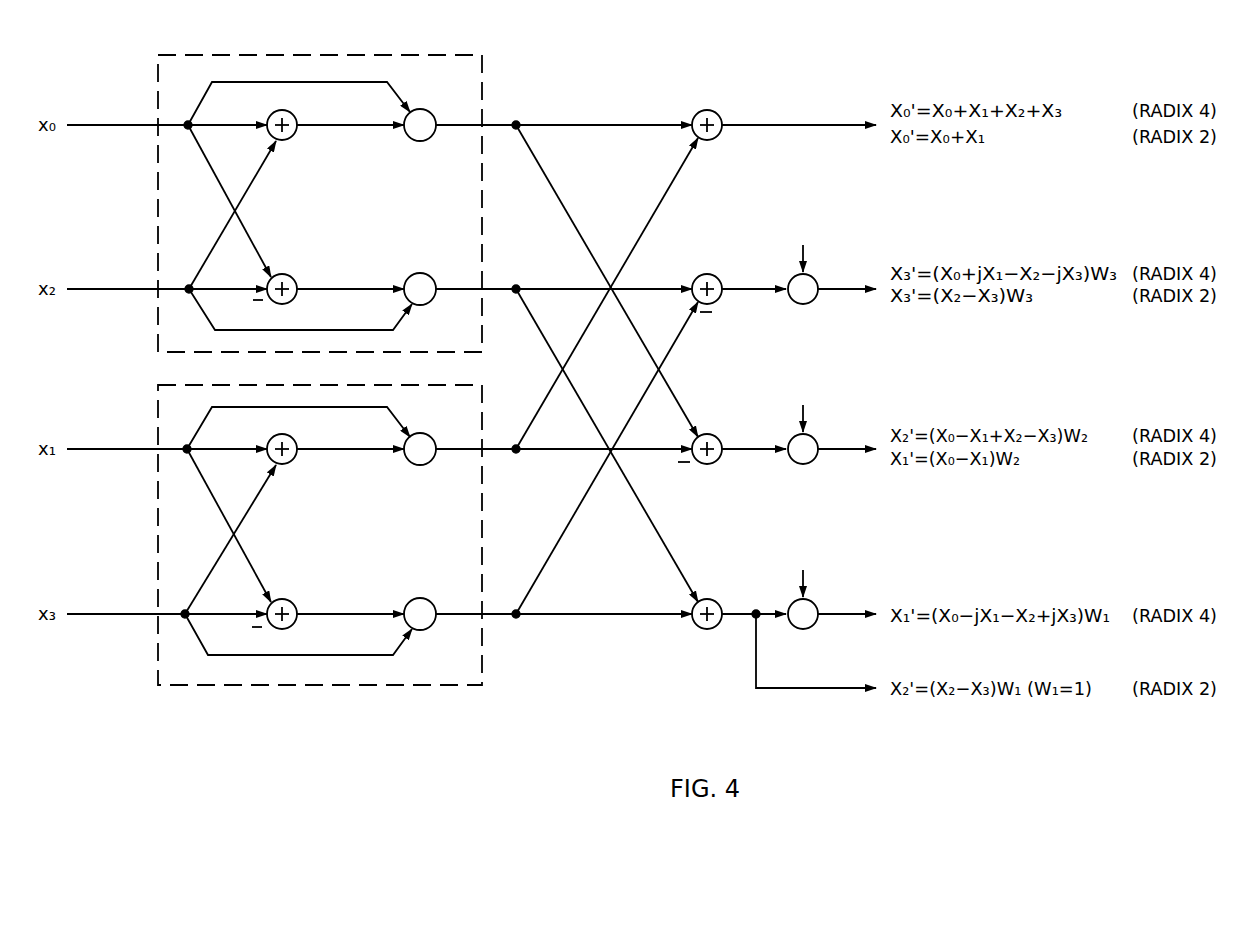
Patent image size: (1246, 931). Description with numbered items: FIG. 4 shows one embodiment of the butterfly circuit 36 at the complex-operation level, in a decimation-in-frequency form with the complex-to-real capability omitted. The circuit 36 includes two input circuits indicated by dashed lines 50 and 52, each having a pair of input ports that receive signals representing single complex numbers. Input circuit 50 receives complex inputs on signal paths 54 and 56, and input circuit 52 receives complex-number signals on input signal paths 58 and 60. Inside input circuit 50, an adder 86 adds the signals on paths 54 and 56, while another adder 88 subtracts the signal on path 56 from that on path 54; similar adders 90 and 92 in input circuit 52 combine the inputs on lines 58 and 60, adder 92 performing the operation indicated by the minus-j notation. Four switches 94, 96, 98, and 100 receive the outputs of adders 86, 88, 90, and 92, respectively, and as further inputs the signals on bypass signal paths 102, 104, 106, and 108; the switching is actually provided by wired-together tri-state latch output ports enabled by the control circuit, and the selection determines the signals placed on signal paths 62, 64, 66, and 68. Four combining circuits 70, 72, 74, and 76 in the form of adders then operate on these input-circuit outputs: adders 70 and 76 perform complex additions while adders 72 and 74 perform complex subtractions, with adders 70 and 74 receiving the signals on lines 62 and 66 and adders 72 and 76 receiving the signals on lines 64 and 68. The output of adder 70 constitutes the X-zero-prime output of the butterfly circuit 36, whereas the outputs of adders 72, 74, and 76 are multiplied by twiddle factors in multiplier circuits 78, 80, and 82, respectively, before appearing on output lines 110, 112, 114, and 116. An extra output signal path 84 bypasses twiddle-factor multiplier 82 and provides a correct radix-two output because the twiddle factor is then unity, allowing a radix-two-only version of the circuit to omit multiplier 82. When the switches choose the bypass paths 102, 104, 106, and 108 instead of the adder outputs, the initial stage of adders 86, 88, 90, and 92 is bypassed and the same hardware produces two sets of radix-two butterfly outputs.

The butterfly circuit 36 is at (614, 314).
The input circuit 50 is at (320, 181).
The input circuit 52 is at (340, 524).
The signal path 54 is at (127, 96).
The signal path 56 is at (128, 260).
The input signal path 58 is at (127, 420).
The input signal path 60 is at (126, 589).
The signal path 62 is at (564, 98).
The signal path 64 is at (564, 262).
The signal path 66 is at (564, 463).
The signal path 68 is at (564, 628).
The combining circuit 70 is at (720, 104).
The combining circuit 72 is at (739, 266).
The combining circuit 74 is at (739, 428).
The combining circuit 76 is at (739, 595).
The multiplier circuit 78 is at (818, 284).
The multiplier circuit 80 is at (818, 444).
The multiplier circuit 82 is at (818, 606).
The output signal path 84 is at (816, 681).
The adder 86 is at (257, 199).
The adder 88 is at (256, 214).
The adder 90 is at (256, 524).
The adder 92 is at (257, 539).
The switch 94 is at (366, 145).
The switch 96 is at (366, 268).
The switch 98 is at (401, 468).
The switch 100 is at (383, 598).
The signal path 102 is at (315, 93).
The signal path 104 is at (300, 309).
The signal path 106 is at (298, 428).
The signal path 108 is at (298, 634).
The output line 110 is at (799, 96).
The output line 112 is at (847, 259).
The output line 114 is at (847, 420).
The output line 116 is at (847, 588).